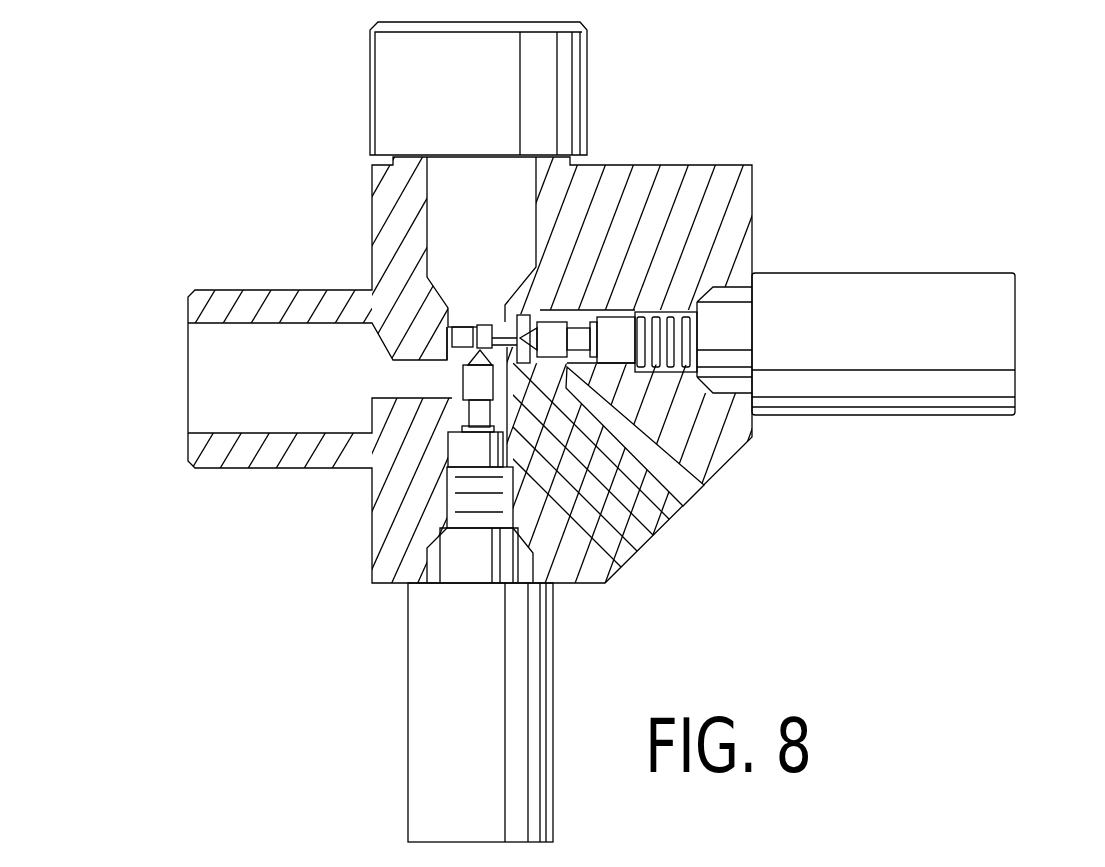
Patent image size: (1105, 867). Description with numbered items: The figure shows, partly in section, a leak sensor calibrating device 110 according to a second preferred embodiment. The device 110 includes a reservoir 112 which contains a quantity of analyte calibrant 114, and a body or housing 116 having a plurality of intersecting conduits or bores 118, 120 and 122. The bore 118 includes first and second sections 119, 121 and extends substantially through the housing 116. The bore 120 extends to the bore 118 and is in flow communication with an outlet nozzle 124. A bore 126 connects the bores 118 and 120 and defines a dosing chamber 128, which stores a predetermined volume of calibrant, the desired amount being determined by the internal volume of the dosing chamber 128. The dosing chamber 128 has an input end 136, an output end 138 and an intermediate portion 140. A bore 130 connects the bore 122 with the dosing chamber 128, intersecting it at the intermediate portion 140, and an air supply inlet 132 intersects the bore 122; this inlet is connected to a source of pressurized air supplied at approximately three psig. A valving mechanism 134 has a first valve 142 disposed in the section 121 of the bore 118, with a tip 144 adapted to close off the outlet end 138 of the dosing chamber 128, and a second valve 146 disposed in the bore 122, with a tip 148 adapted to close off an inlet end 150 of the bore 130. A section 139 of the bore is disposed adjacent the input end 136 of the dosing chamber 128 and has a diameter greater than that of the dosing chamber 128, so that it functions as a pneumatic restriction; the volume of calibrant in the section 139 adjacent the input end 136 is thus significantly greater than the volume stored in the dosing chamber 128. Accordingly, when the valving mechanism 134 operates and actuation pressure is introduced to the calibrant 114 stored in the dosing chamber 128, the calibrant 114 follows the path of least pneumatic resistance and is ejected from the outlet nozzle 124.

The leak sensor calibrating device 110 is at (250, 159).
The reservoir 112 is at (370, 80).
The analyte calibrant 114 is at (450, 193).
The body or housing 116 is at (652, 163).
The bore 118 is at (427, 258).
The first section 119 is at (427, 222).
The bore 120 is at (268, 435).
The second section 121 is at (450, 447).
The bore 122 is at (620, 300).
The outlet nozzle 124 is at (207, 400).
The bore 126 is at (448, 355).
The dosing chamber 128 is at (450, 350).
The bore 130 is at (540, 290).
The air supply inlet 132 is at (683, 502).
The valving mechanism 134 is at (996, 459).
The input end 136 is at (484, 322).
The output end 138 is at (372, 467).
The section 139 is at (447, 308).
The intermediate portion 140 is at (540, 195).
The first valve 142 is at (408, 617).
The tip 144 is at (503, 370).
The second valve 146 is at (818, 415).
The tip 148 is at (630, 553).
The inlet end 150 is at (690, 280).